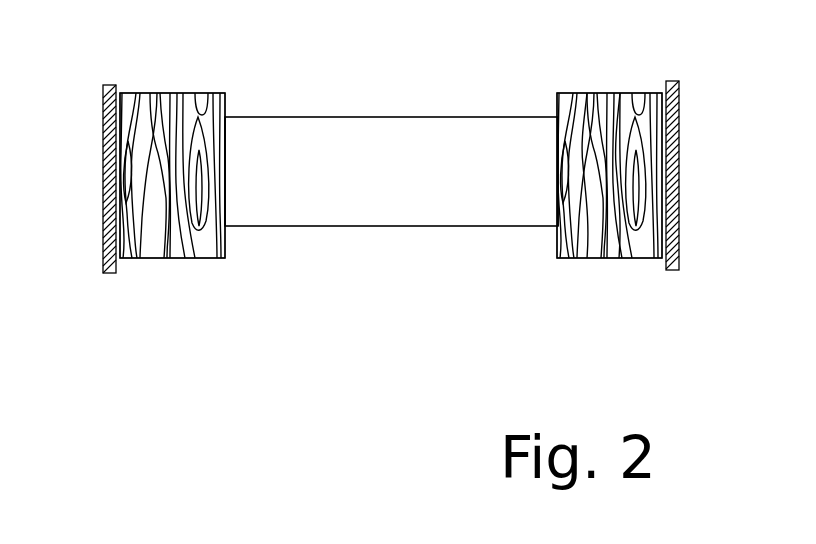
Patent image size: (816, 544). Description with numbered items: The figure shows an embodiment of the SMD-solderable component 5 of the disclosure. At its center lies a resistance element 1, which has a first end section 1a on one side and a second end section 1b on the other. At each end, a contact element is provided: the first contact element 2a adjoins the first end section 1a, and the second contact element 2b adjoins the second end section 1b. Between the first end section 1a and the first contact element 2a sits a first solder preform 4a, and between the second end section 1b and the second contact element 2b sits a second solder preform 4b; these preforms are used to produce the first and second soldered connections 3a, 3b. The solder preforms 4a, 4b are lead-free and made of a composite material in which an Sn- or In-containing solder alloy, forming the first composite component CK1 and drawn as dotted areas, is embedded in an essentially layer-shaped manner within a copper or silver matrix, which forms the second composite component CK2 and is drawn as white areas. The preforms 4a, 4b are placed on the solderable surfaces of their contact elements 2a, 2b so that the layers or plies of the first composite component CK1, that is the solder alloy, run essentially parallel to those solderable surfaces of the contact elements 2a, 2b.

The resistance element 1 is at (402, 184).
The first end section 1a is at (244, 280).
The second end section 1b is at (546, 280).
The first contact element 2a is at (110, 273).
The second contact element 2b is at (673, 270).
The first soldered connection 3a is at (165, 258).
The first solder preform 4a is at (165, 258).
The second soldered connection 3b is at (620, 258).
The second solder preform 4b is at (620, 258).
The SMD-solderable component 5 is at (396, 73).
The first composite component CK1 is at (596, 94).
The second composite component CK2 is at (617, 94).